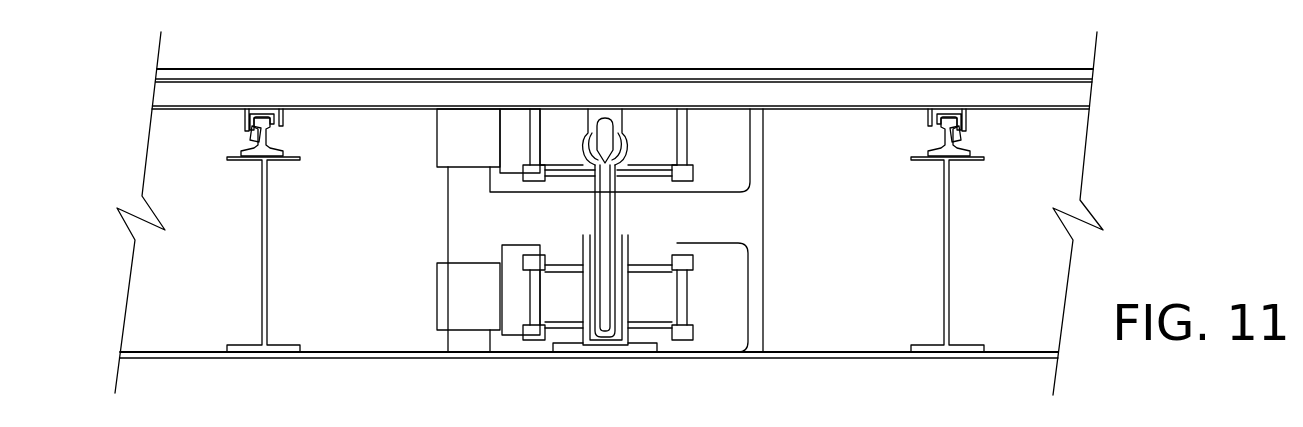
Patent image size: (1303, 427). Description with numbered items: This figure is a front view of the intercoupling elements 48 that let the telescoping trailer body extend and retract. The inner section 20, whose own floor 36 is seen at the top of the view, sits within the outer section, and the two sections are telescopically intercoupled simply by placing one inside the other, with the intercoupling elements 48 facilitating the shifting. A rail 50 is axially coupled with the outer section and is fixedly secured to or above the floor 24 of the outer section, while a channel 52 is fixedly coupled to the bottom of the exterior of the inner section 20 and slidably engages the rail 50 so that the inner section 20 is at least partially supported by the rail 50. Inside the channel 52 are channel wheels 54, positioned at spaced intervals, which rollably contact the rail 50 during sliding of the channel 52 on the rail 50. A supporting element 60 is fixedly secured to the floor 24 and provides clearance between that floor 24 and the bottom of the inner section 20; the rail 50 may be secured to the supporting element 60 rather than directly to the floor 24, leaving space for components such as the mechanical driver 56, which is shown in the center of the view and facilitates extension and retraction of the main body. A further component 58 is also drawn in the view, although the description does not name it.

The inner section 20 is at (502, 86).
The floor 24 is at (812, 352).
The floor 36 is at (855, 69).
The intercoupling elements 48 is at (316, 292).
The rail 50 is at (267, 133).
The channel 52 is at (287, 115).
The channel wheels 54 is at (248, 131).
The mechanical driver 56 is at (400, 131).
The bracket 58 is at (711, 140).
The supporting element 60 is at (262, 182).